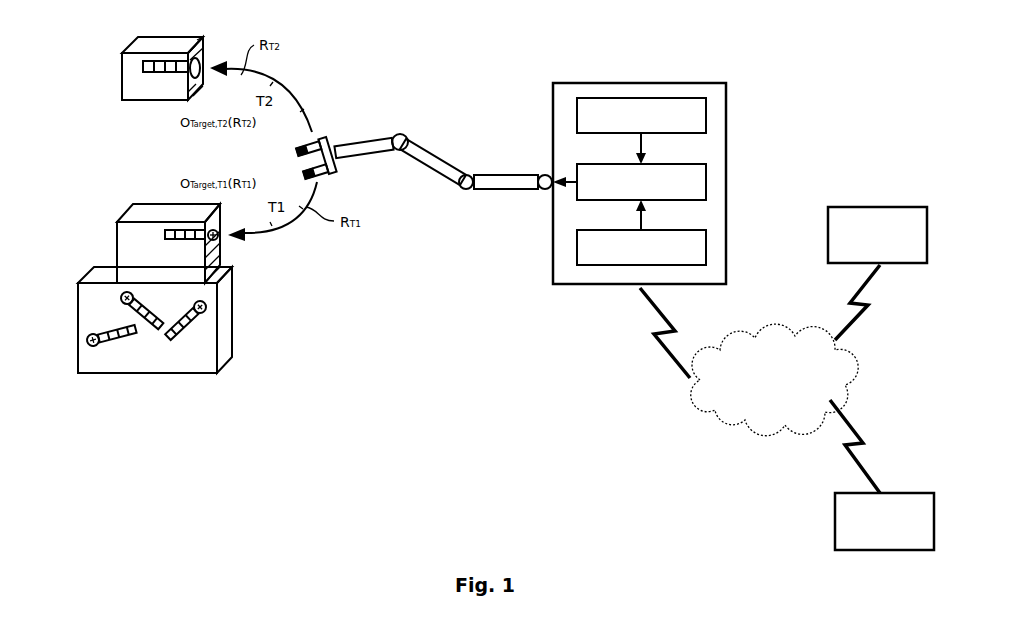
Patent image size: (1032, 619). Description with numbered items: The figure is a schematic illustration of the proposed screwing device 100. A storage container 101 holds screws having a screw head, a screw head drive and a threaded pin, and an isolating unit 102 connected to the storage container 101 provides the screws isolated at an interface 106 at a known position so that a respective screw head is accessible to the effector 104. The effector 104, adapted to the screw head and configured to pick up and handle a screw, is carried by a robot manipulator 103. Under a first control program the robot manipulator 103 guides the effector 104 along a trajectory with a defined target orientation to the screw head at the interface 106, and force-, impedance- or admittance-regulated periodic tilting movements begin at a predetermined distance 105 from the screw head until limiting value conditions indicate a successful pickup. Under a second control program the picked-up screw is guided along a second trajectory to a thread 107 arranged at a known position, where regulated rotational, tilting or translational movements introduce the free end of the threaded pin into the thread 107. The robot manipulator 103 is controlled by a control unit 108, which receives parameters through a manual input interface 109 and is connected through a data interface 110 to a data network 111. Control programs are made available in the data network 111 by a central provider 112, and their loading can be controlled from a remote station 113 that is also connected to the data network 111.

The screwing device 100 is at (550, 56).
The storage container 101 is at (78, 334).
The isolating unit 102 is at (117, 251).
The robot manipulator 103 is at (440, 145).
The effector 104 is at (322, 138).
The predetermined distance 105 is at (223, 243).
The interface 106 is at (220, 256).
The thread 107 is at (122, 68).
The control unit 108 is at (706, 181).
The manual input interface 109 is at (706, 114).
The data interface 110 is at (706, 245).
The data network 111 is at (770, 336).
The central provider 112 is at (905, 493).
The remote station 113 is at (877, 207).